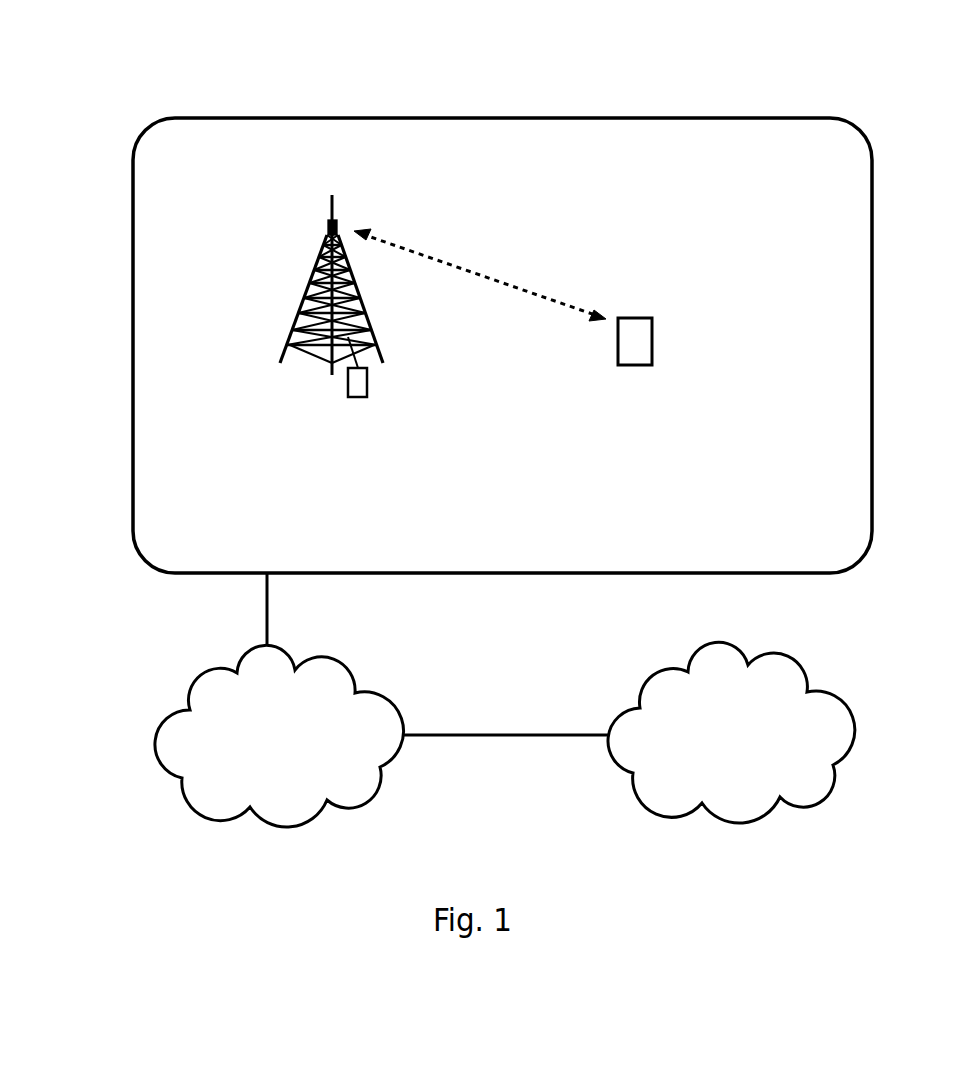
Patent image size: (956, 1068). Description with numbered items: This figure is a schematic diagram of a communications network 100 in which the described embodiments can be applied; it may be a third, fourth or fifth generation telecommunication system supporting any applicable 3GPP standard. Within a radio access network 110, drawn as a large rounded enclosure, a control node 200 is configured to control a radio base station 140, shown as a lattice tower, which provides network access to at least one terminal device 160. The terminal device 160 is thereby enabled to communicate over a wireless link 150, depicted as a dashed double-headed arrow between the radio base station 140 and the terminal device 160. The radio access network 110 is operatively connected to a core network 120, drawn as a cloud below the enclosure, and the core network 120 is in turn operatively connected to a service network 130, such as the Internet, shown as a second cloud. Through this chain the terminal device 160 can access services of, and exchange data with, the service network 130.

The communications network 100 is at (218, 58).
The radio access network 110 is at (133, 398).
The core network 120 is at (381, 700).
The service network 130 is at (731, 732).
The radio base station 140 is at (330, 213).
The wireless link 150 is at (466, 270).
The terminal device 160 is at (636, 365).
The control node 200 is at (348, 388).